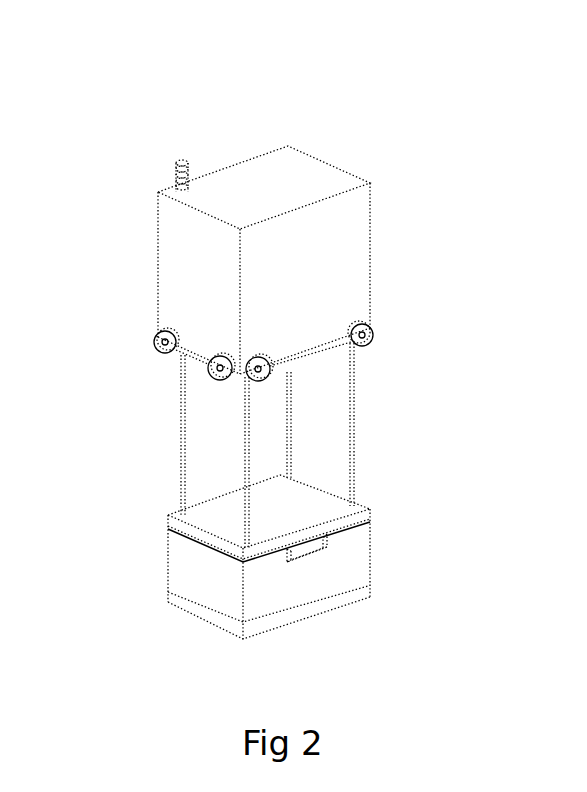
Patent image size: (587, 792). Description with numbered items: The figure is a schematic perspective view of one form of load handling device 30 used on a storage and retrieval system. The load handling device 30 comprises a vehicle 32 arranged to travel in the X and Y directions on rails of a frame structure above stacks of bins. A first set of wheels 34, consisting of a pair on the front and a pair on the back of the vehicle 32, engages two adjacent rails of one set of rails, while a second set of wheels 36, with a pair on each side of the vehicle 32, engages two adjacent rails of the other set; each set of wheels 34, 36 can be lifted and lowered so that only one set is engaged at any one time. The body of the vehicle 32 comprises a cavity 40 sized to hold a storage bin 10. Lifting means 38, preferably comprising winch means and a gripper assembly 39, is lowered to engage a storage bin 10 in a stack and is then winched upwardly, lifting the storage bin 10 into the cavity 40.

The load handling device 30 is at (135, 117).
The vehicle 32 is at (320, 247).
The first set of wheels 34 is at (367, 334).
The second set of wheels 36 is at (160, 332).
The lifting means 38 is at (353, 423).
The gripper assembly 39 is at (320, 508).
The cavity 40 is at (200, 365).
The storage bin 10 is at (343, 570).